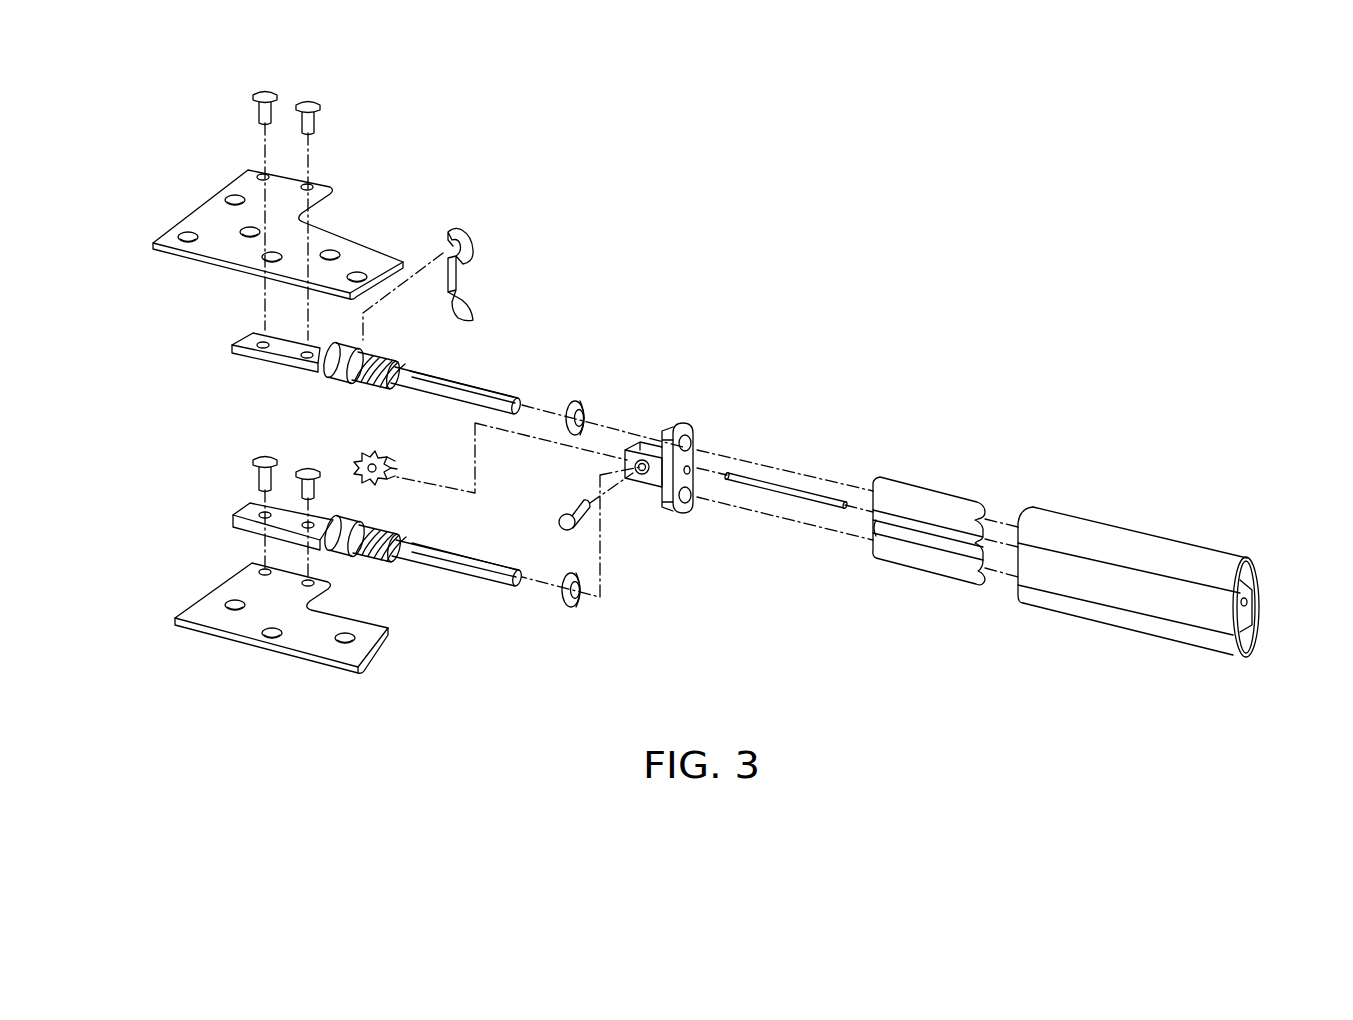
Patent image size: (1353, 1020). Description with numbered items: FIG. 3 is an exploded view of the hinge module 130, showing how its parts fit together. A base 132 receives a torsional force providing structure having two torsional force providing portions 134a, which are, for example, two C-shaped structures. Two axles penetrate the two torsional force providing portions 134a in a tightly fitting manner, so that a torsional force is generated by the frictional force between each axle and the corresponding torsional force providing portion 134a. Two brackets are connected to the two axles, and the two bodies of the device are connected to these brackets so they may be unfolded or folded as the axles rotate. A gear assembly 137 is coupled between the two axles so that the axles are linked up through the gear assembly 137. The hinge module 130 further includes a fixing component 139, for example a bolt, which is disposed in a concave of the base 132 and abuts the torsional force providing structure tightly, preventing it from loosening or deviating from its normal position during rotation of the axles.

The hinge module 130 is at (1247, 719).
The base 132 is at (1132, 537).
The torsional force providing portion 134a is at (920, 495).
The gear assembly 137 is at (347, 450).
The fixing component 139 is at (785, 482).